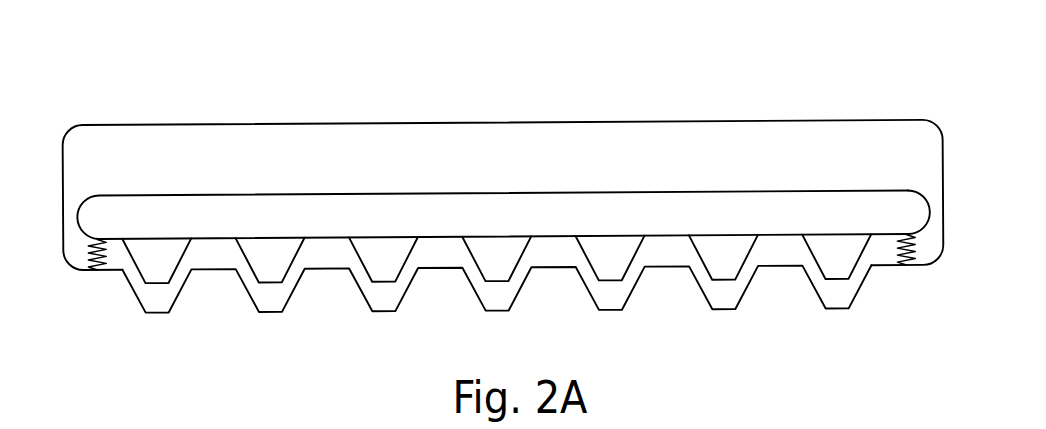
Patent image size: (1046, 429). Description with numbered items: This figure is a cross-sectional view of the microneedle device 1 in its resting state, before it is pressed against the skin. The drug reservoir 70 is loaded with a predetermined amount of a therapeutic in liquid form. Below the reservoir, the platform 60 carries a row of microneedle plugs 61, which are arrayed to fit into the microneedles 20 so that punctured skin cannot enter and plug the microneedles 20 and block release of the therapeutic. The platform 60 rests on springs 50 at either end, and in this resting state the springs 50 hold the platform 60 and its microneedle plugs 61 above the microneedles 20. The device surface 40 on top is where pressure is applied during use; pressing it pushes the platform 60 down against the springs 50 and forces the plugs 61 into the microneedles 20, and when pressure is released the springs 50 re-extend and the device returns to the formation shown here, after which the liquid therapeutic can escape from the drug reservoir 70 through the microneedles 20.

The microneedle device 1 is at (799, 70).
The microneedles 20 is at (590, 302).
The device surface 40 is at (583, 122).
The springs 50 is at (112, 263).
The platform 60 is at (908, 199).
The microneedle plugs 61 is at (272, 258).
The drug reservoir 70 is at (147, 207).